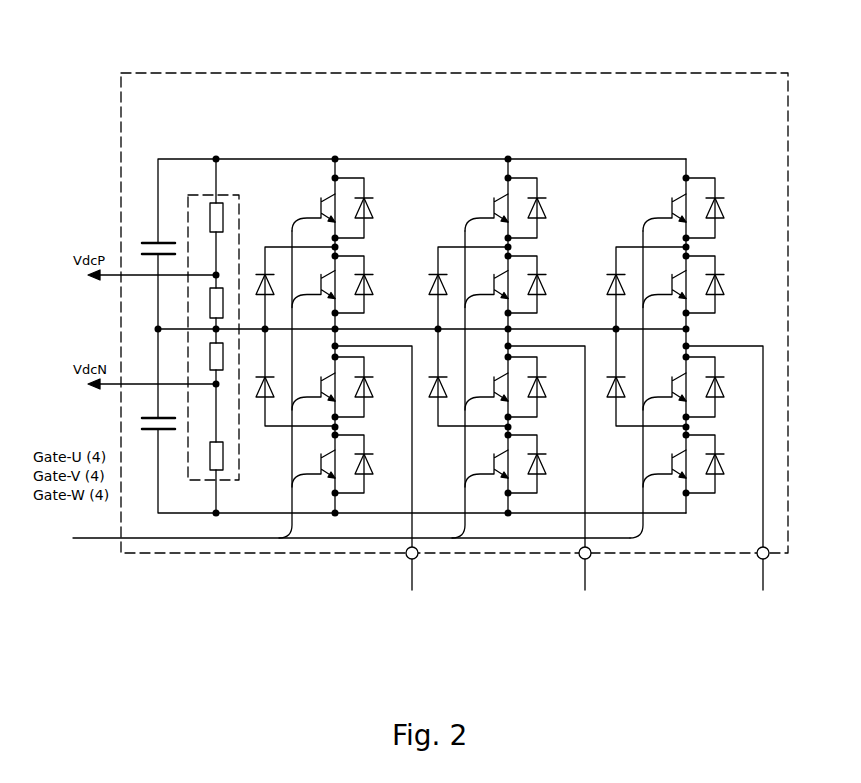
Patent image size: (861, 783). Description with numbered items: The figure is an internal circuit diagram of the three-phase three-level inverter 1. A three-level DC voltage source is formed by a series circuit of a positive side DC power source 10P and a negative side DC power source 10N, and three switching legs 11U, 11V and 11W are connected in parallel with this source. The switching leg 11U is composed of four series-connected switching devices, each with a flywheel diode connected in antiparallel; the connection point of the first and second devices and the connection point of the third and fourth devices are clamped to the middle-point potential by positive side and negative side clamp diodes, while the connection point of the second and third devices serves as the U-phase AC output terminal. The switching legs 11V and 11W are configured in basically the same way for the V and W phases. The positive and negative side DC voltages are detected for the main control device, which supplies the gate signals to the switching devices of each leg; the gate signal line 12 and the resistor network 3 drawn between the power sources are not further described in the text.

The three-phase three-level inverter 1 is at (500, 73).
The voltage dividing resistor circuit 3 is at (239, 203).
The positive side DC power source 10P is at (156, 241).
The negative side DC power source 10N is at (157, 435).
The switching leg 11U is at (335, 144).
The switching leg 11V is at (502, 144).
The switching leg 11W is at (678, 147).
The gate signal line 12 is at (86, 552).